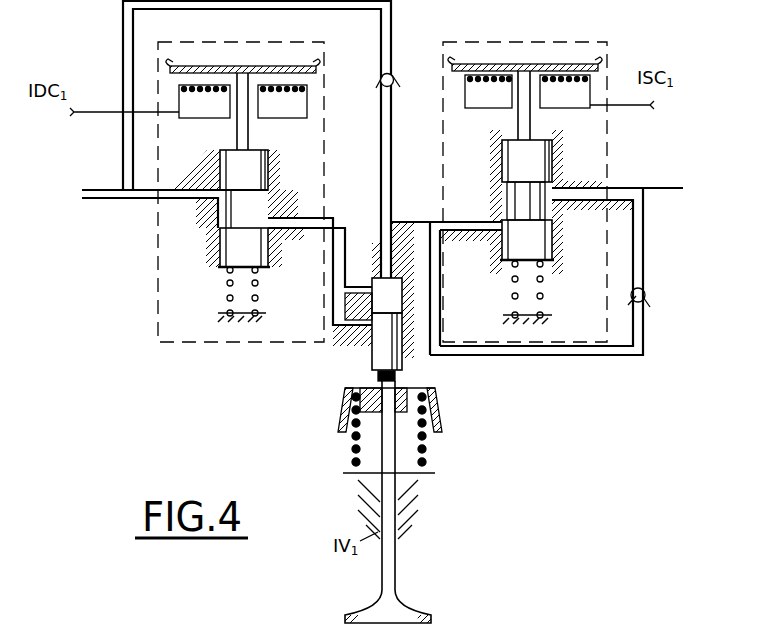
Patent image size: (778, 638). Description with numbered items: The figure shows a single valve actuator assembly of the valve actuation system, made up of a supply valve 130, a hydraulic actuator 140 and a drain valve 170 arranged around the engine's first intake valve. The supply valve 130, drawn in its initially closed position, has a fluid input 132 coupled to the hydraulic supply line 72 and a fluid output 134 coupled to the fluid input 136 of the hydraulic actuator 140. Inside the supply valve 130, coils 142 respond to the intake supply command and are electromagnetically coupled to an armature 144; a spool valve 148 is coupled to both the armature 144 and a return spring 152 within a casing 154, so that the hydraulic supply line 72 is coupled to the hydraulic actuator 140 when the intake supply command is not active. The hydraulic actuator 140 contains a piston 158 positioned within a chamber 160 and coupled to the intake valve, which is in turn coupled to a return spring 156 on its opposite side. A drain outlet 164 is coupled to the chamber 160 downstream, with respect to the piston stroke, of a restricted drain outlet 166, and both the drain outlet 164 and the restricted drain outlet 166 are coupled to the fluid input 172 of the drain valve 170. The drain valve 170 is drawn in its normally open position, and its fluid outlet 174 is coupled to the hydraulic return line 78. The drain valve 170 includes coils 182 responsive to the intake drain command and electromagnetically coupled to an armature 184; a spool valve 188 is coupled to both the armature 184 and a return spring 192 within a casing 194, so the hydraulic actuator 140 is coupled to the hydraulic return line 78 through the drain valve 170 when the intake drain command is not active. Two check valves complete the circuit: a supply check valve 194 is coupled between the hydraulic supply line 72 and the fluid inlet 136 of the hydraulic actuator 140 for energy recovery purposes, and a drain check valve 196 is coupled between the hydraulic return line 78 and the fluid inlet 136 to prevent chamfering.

The hydraulic supply line 72 is at (658, 203).
The hydraulic return line 78 is at (121, 187).
The supply valve 130 is at (612, 155).
The fluid input 132 is at (555, 186).
The fluid output 134 is at (493, 223).
The fluid input 136 is at (388, 280).
The hydraulic actuator 140 is at (362, 368).
The coils 142 is at (477, 80).
The armature 144 is at (543, 66).
The spool valve 148 is at (556, 142).
The return spring 152 is at (540, 295).
The casing 154 is at (497, 183).
The return spring 156 is at (356, 448).
The piston 158 is at (367, 360).
The chamber 160 is at (402, 358).
The drain outlet 164 is at (352, 332).
The restricted drain outlet 166 is at (360, 285).
The drain valve 170 is at (296, 40).
The fluid input 172 is at (287, 205).
The fluid outlet 174 is at (189, 234).
The coils 182 is at (295, 90).
The armature 184 is at (227, 68).
The spool valve 188 is at (270, 156).
The return spring 192 is at (226, 283).
The supply check valve 194 is at (213, 154).
The drain check valve 196 is at (380, 76).